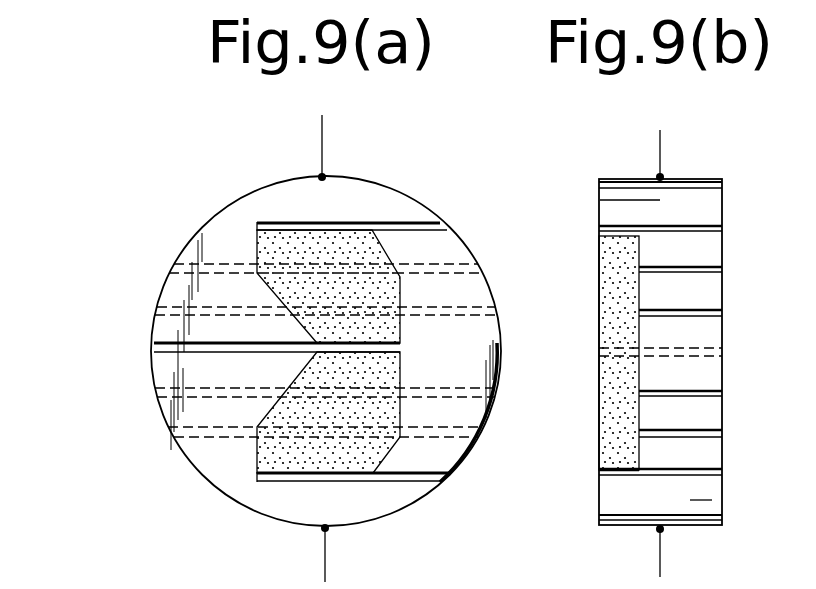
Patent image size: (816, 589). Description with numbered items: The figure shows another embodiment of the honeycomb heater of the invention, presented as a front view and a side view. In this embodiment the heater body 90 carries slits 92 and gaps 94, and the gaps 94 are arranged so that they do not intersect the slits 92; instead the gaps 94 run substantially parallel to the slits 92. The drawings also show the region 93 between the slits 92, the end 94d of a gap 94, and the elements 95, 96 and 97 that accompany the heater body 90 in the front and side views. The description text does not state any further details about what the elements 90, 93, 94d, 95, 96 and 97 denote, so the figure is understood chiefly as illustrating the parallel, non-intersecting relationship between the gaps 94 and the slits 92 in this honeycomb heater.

In FIG. 9A, the electrode assembly 90 is at (110, 421).
In FIG. 9A, the slits 92 is at (438, 226).
In FIG. 9B, the slits 92 is at (718, 231).
In FIG. 9A, the dielectric / porous body 93 is at (288, 260).
In FIG. 9B, the dielectric / porous body 93 is at (600, 330).
In FIG. 9A, the gaps 94 is at (483, 310).
In FIG. 9B, the gaps 94 is at (722, 315).
In FIG. 9B, the electrode layer end 94d is at (638, 437).
In FIG. 9A, the lead wire 95 is at (323, 152).
In FIG. 9B, the lead wire 95 is at (661, 152).
In FIG. 9B, the bottom plate 96 is at (597, 508).
In FIG. 9B, the spacer 97 is at (710, 503).